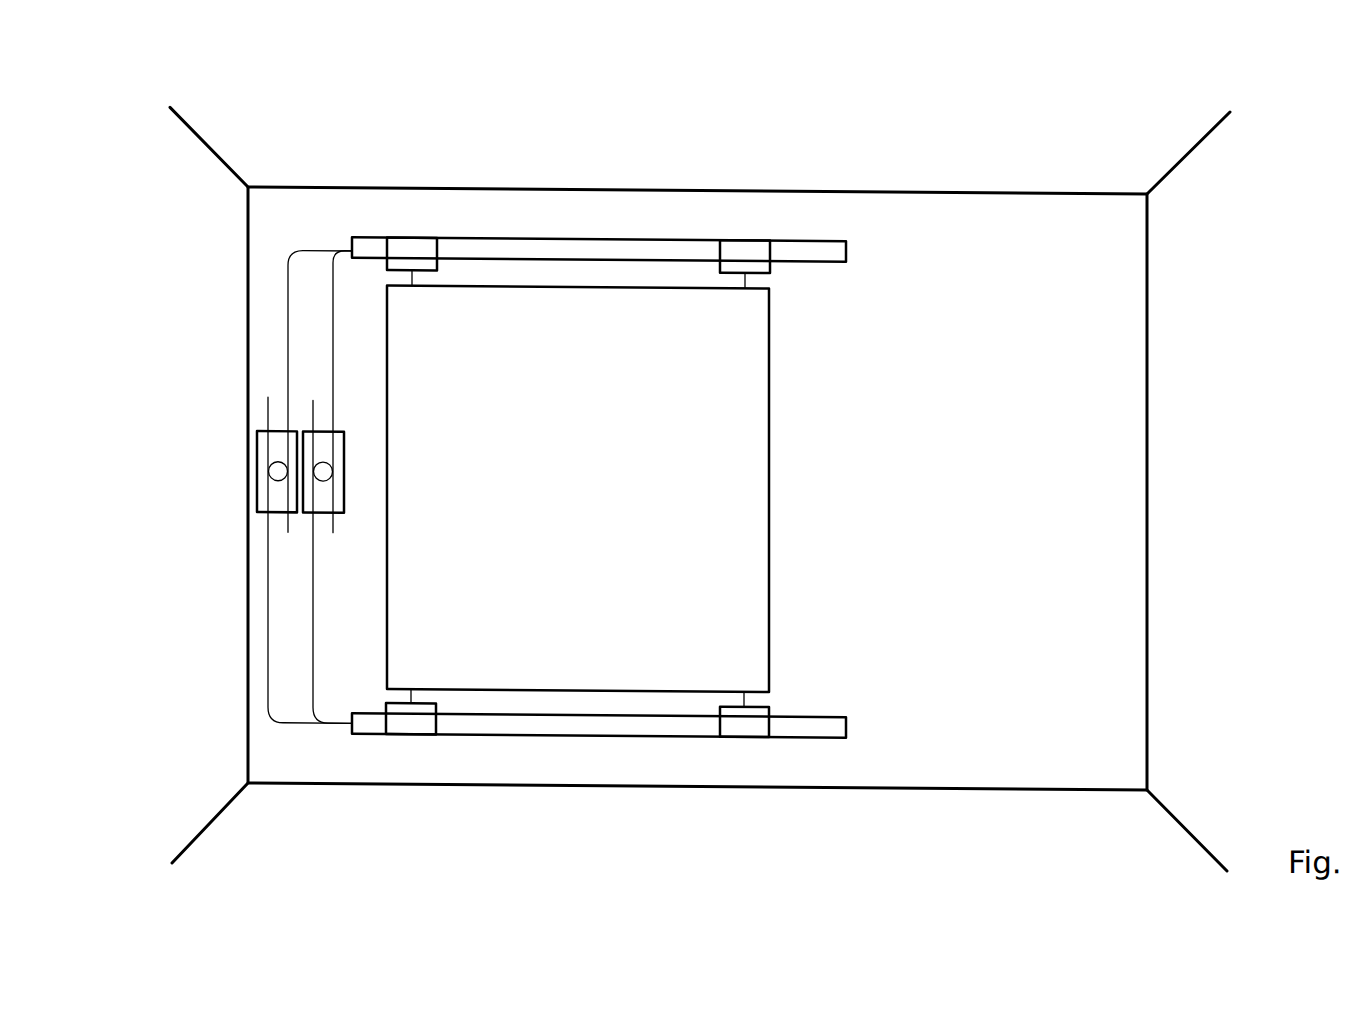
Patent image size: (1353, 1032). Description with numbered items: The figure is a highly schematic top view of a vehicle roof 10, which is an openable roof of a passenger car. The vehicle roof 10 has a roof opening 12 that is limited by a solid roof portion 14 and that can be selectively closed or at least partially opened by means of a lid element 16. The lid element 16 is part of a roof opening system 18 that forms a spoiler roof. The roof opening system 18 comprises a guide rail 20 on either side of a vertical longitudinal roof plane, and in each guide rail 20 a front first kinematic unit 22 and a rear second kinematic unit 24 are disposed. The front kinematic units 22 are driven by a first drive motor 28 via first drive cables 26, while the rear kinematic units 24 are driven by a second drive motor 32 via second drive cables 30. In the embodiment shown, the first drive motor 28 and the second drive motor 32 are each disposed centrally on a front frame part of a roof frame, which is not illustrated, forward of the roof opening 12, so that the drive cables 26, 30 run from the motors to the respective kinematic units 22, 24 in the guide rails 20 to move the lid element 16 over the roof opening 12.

The vehicle roof 10 is at (731, 488).
The roof opening 12 is at (473, 283).
The solid roof portion 14 is at (958, 486).
The lid element 16 is at (555, 496).
The roof opening system 18 is at (527, 228).
The guide rail 20 is at (598, 235).
The front first kinematic unit 22 is at (407, 236).
The rear second kinematic unit 24 is at (748, 235).
The first drive cable 26 is at (288, 345).
The first drive motor 28 is at (270, 472).
The second drive cable 30 is at (332, 317).
The second drive motor 32 is at (320, 466).